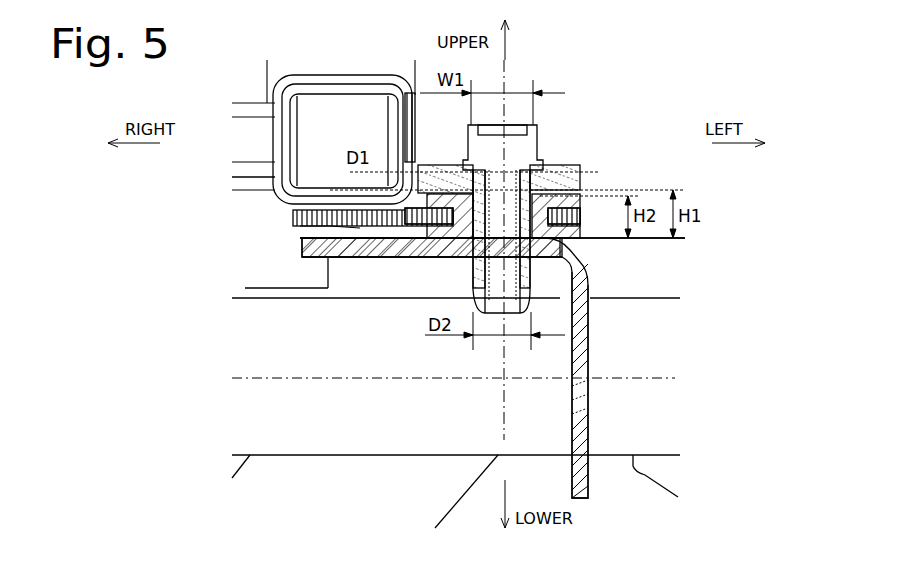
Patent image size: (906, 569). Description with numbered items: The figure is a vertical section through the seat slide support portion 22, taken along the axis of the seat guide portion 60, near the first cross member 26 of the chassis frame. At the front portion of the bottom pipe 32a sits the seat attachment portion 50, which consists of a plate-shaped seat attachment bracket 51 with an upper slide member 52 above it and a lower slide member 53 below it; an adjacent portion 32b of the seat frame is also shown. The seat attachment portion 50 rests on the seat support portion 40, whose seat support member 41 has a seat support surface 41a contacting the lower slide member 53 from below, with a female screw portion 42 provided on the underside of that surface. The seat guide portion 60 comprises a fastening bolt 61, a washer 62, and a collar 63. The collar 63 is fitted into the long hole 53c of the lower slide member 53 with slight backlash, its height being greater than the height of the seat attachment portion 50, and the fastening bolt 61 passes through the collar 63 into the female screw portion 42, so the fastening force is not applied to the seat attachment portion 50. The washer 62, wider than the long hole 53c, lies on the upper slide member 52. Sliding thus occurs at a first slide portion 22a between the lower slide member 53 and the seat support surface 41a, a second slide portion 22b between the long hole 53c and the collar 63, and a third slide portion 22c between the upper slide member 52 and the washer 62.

The seat slide support portion 22 is at (487, 180).
The first slide portion 22a is at (458, 248).
The second slide portion 22b is at (537, 150).
The third slide portion 22c is at (440, 176).
The first cross member 26 is at (325, 455).
The bottom pipe 32a is at (325, 92).
The plate portion 32b is at (232, 180).
The seat support portion 40 is at (500, 368).
The seat support member 41 is at (590, 272).
The seat support surface 41a is at (585, 240).
The female screw portion 42 is at (590, 332).
The seat attachment portion 50 is at (398, 257).
The seat attachment bracket 51 is at (347, 233).
The upper slide member 52 is at (300, 220).
The lower slide member 53 is at (395, 237).
The long hole 53c is at (485, 157).
The seat guide portion 60 is at (537, 172).
The fastening bolt 61 is at (548, 165).
The washer 62 is at (588, 187).
The collar 63 is at (577, 190).